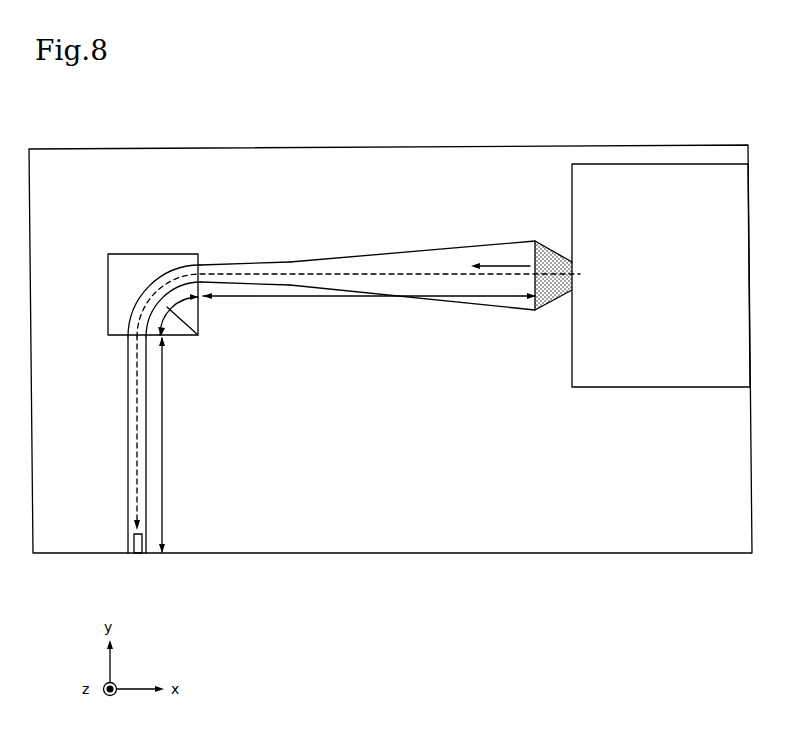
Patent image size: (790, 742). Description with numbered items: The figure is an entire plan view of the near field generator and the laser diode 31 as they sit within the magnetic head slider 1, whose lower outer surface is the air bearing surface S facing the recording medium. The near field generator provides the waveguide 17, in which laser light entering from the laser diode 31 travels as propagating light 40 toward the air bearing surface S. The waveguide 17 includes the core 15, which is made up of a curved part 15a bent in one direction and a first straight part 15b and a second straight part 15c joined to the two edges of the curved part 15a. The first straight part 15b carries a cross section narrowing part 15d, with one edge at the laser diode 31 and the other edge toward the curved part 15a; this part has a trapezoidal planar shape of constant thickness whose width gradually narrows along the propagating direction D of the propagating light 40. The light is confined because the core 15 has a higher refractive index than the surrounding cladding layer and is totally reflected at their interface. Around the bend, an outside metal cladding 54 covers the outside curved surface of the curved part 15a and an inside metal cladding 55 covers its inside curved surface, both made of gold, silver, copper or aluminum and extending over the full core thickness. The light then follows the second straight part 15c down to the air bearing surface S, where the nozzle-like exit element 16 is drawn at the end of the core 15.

The magnetic head slider 1 is at (340, 140).
The laser diode 31 is at (630, 172).
The outside metal cladding 54 is at (130, 260).
The inside metal cladding 55 is at (177, 292).
The waveguide 17 is at (350, 371).
The core 15 is at (350, 375).
The curved part 15a is at (368, 317).
The first straight part 15b is at (198, 337).
The second straight part 15c is at (163, 392).
The cross section narrowing part 15d is at (396, 262).
The propagating light 40 is at (138, 414).
The nozzle opening 16 is at (135, 540).
The air bearing surface S is at (375, 552).
The propagating direction D is at (500, 257).